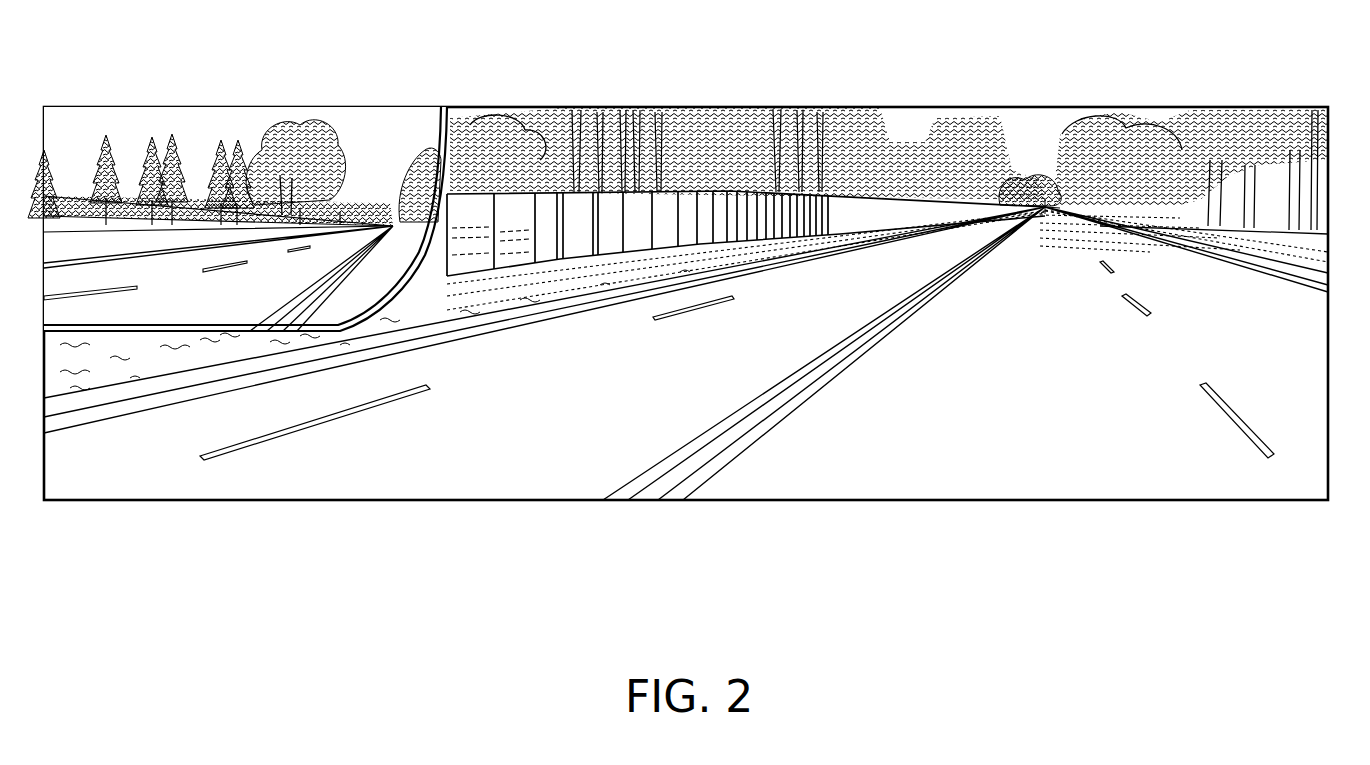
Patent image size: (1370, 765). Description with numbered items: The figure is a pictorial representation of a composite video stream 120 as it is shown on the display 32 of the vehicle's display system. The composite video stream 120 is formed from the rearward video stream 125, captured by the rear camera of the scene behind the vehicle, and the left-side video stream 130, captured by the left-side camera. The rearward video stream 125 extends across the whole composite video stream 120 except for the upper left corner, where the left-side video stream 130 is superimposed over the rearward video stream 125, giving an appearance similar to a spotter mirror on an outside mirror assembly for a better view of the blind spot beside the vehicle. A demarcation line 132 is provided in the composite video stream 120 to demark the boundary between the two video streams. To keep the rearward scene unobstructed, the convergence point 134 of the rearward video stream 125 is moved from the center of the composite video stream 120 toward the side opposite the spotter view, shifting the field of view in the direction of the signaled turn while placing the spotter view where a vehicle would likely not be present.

The display 32 is at (1200, 107).
The composite video stream 120 is at (993, 480).
The rearward video stream 125 is at (808, 462).
The left-side video stream 130 is at (196, 143).
The demarcation line 132 is at (447, 107).
The convergence point 134 is at (1045, 200).